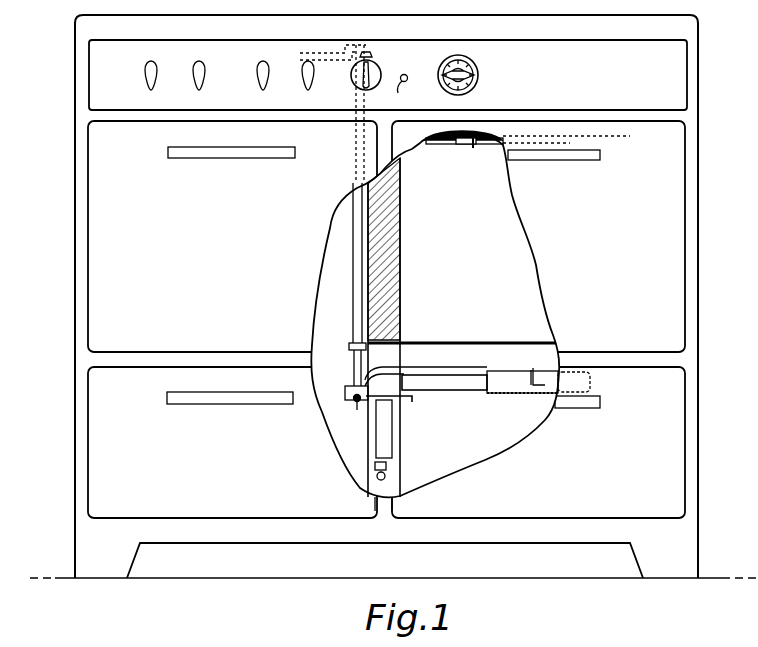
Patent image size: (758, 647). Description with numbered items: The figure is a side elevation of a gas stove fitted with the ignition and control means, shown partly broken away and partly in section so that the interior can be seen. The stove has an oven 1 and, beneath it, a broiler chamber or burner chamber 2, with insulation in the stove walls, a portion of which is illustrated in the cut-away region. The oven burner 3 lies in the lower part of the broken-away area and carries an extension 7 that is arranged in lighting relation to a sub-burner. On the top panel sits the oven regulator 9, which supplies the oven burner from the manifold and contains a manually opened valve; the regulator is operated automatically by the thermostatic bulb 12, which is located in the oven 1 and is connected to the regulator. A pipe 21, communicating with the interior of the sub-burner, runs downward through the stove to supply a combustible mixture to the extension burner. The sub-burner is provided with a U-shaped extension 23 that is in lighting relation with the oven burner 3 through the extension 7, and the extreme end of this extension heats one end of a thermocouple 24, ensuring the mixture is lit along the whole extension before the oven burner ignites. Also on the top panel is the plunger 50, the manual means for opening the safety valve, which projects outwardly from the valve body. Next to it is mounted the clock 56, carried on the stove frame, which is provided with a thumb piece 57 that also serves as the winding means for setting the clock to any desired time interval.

The oven 1 is at (508, 230).
The broiler chamber or burner chamber 2 is at (527, 422).
The oven burner 3 is at (500, 384).
The extension 7 is at (448, 377).
The oven regulator 9 is at (384, 68).
The thermostatic bulb 12 is at (487, 146).
The pipe 21 is at (353, 240).
The U-shaped extension 23 is at (406, 398).
The thermocouple 24 is at (363, 378).
The plunger 50 is at (409, 92).
The clock 56 is at (476, 67).
The thumb piece 57 is at (474, 81).